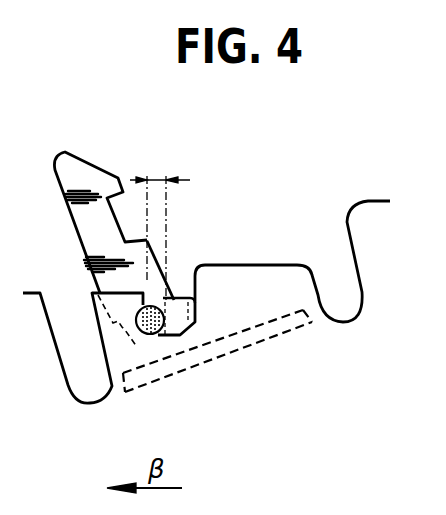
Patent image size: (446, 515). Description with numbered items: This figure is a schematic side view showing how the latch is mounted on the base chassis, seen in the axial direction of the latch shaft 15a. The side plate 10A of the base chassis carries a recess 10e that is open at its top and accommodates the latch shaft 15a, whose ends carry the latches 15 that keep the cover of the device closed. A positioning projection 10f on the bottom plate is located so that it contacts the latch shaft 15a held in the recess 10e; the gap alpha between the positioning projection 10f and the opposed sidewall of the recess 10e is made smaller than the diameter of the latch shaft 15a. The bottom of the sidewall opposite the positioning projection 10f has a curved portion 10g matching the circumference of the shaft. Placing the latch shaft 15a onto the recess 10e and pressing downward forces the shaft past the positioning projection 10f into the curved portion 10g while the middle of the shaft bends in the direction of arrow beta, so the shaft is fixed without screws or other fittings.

The latch 15 is at (77, 173).
The recess 10e is at (152, 264).
The positioning projection 10f is at (185, 280).
The curved portion 10g is at (143, 328).
The latch shaft 15a is at (152, 335).
The side plate 10A is at (255, 300).